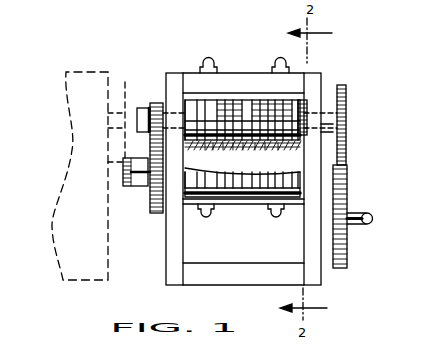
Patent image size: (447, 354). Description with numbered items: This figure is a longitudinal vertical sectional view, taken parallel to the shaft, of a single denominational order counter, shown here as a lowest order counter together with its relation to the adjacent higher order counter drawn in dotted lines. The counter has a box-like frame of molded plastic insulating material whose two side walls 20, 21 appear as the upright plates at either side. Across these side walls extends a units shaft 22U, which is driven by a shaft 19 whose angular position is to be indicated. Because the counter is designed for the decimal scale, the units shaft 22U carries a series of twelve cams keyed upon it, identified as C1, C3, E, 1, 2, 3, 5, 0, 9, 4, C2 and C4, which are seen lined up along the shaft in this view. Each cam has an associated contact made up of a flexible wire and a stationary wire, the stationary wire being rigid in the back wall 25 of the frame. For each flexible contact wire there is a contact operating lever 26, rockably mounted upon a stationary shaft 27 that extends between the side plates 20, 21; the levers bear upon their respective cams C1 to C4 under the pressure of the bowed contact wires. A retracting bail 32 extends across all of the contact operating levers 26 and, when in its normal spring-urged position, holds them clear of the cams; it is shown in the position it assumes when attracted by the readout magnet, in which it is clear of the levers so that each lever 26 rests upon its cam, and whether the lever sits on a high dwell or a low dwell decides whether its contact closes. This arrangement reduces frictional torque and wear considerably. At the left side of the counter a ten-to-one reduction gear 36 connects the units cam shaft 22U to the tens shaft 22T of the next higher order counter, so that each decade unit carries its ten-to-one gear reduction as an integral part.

The tens shaft 22T is at (127, 82).
The ten-to-one reduction gear 36 is at (153, 106).
The side wall 21 is at (173, 76).
The side wall 20 is at (318, 76).
The cam C1 is at (196, 100).
The cam C3 is at (200, 102).
The cam C2 is at (290, 103).
The cam C4 is at (300, 103).
The cam E is at (204, 145).
The cam 1 is at (214, 144).
The cam 2 is at (225, 144).
The cam 3 is at (234, 144).
The cam 5 is at (245, 144).
The cam 0 is at (256, 144).
The cam 9 is at (267, 144).
The cam 4 is at (279, 144).
The back wall 25 is at (222, 204).
The retracting bail 32 is at (238, 205).
The stationary shaft 27 is at (189, 205).
The contact operating lever 26 is at (263, 205).
The units shaft 22U is at (345, 108).
The shaft 19 is at (364, 213).